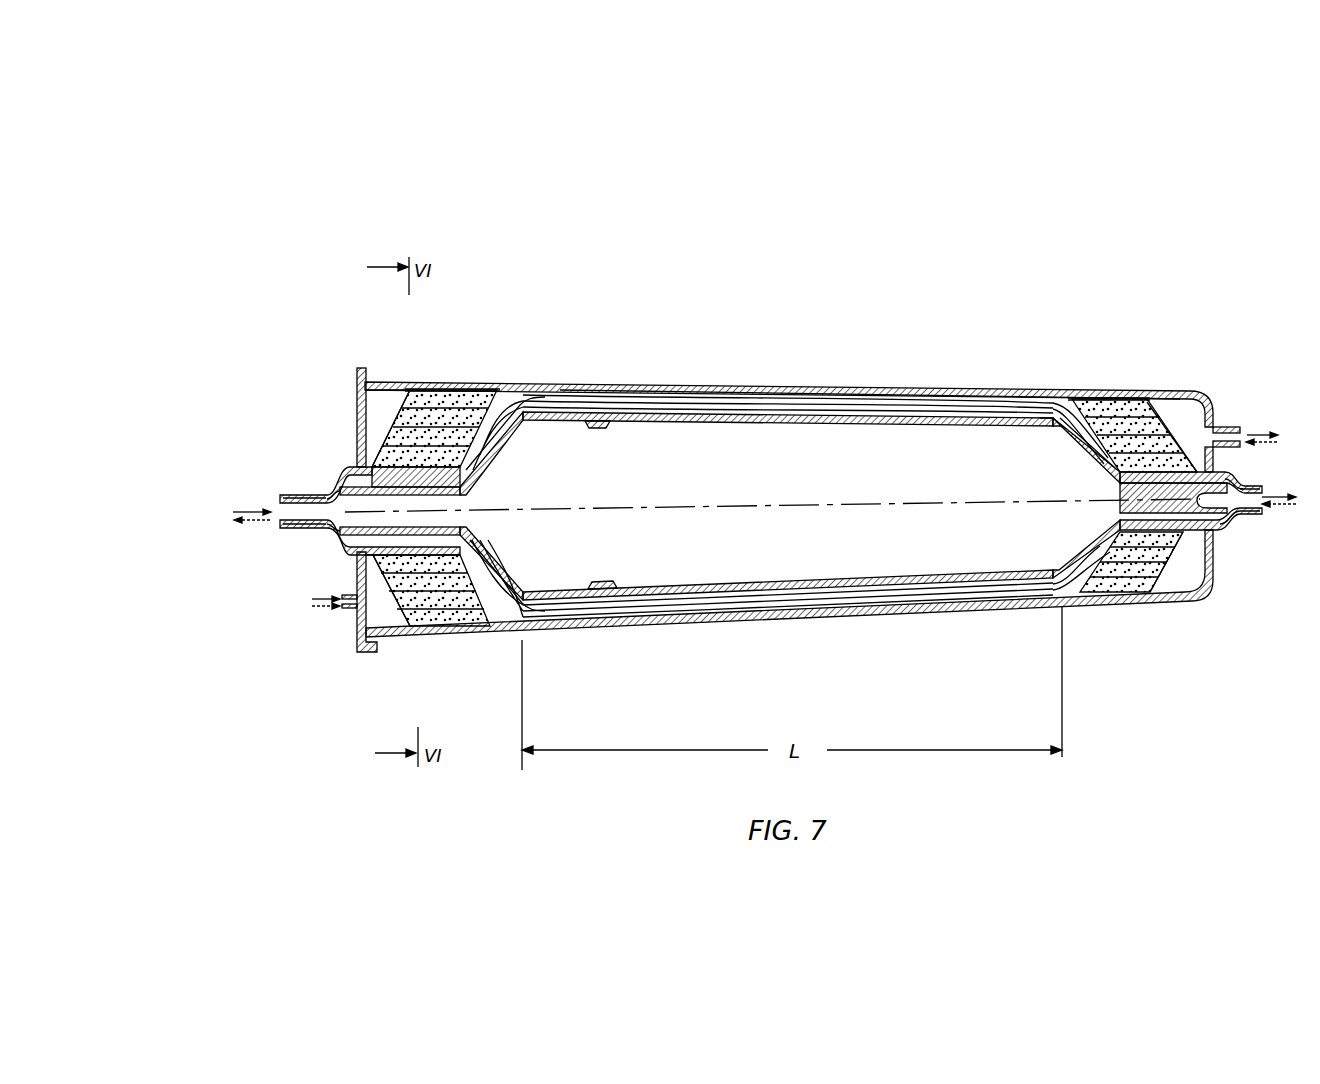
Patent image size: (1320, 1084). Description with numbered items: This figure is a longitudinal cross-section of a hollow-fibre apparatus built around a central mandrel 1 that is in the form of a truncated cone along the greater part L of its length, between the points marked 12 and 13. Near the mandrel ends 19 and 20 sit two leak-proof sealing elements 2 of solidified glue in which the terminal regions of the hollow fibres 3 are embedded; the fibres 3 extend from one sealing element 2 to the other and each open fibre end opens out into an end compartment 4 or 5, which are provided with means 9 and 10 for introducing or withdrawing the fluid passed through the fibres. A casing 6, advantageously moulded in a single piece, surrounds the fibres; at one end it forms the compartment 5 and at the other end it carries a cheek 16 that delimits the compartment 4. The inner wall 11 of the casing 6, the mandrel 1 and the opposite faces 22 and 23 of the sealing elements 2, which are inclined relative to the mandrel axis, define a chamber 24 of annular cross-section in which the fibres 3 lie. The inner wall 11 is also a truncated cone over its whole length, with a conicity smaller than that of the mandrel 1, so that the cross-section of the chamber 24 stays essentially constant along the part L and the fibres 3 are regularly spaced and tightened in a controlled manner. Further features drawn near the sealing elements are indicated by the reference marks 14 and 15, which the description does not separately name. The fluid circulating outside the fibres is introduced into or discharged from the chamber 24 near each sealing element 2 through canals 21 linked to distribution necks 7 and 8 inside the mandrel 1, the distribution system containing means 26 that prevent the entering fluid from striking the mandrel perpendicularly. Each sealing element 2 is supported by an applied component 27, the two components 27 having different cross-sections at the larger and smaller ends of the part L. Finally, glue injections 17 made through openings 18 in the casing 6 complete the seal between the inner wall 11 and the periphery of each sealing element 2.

The mandrel 1 is at (988, 540).
The sealing element 2 is at (440, 597).
The hollow fibres 3 is at (677, 408).
The compartment 4 is at (1185, 575).
The compartment 5 is at (387, 613).
The casing 6 is at (878, 387).
The distribution system or neck 7 is at (280, 523).
The distribution system or neck 8 is at (1260, 493).
The fluid introduction or withdrawal means 9 is at (1240, 428).
The fluid introduction or withdrawal means 10 is at (342, 608).
The inner wall of the casing 11 is at (937, 390).
The end point of truncated-cone part L 12 is at (518, 632).
The end point of truncated-cone part L 13 is at (1053, 413).
The fiber strands at cone 14 is at (488, 603).
The cone liner 15 is at (1067, 427).
The cheek 16 is at (355, 403).
The glue injection 17 is at (412, 380).
The opening 18 is at (443, 387).
The mandrel end 19 is at (427, 397).
The mandrel end 20 is at (1140, 493).
The canals 21 is at (465, 527).
The face of sealing element 22 is at (493, 400).
The face of sealing element 23 is at (1097, 440).
The chamber 24 is at (593, 418).
The fluid deflecting means 26 is at (335, 490).
The applied component 27 is at (290, 495).